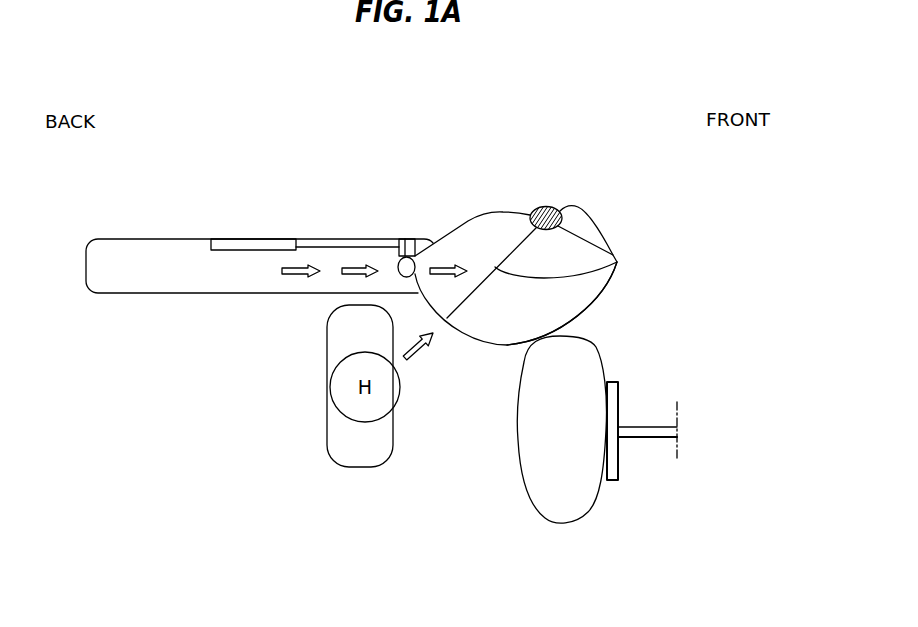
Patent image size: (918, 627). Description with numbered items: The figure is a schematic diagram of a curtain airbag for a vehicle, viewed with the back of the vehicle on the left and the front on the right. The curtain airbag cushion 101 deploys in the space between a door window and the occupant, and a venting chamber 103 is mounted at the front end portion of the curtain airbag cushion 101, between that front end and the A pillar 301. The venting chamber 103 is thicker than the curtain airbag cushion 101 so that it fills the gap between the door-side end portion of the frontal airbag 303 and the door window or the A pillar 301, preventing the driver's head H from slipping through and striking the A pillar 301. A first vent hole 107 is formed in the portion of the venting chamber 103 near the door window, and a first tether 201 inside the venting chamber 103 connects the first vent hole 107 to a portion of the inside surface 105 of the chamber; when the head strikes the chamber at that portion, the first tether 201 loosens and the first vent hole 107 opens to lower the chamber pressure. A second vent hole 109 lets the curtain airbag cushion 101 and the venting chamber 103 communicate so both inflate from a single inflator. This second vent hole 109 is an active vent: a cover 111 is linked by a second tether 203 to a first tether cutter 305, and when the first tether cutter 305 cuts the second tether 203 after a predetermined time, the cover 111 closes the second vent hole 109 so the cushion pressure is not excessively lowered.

The curtain airbag cushion 101 is at (122, 239).
The venting chamber 103 is at (483, 227).
The inside surface of the venting chamber 105 is at (592, 308).
The first vent hole 107 is at (545, 215).
The second vent hole 109 is at (407, 266).
The cover 111 is at (405, 243).
The first tether 201 is at (618, 263).
The second tether 203 is at (323, 247).
The A pillar 301 is at (587, 222).
The frontal airbag 303 is at (563, 525).
The first tether cutter 305 is at (254, 244).